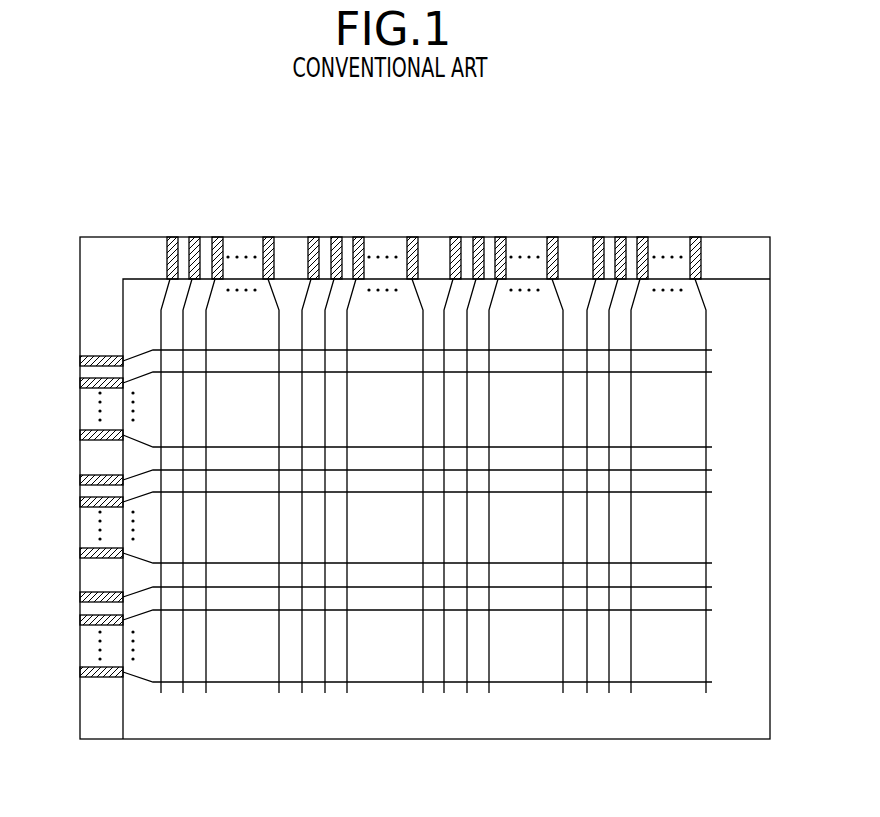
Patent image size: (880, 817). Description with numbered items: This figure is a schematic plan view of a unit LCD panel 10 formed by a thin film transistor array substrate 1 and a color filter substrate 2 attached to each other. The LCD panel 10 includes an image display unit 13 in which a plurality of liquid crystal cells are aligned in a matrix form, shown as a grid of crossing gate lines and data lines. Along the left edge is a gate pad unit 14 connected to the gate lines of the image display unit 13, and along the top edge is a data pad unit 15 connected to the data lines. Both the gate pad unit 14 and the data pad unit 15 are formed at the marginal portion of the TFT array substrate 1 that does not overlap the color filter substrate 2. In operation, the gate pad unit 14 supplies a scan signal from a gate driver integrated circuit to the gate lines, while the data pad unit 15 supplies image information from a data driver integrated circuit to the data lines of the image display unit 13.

The LCD panel 10 is at (104, 218).
The TFT array substrate 1 is at (758, 259).
The color filter substrate 2 is at (758, 318).
The image display unit 13 is at (403, 421).
The gate pad unit 14 is at (70, 680).
The data pad unit 15 is at (705, 218).